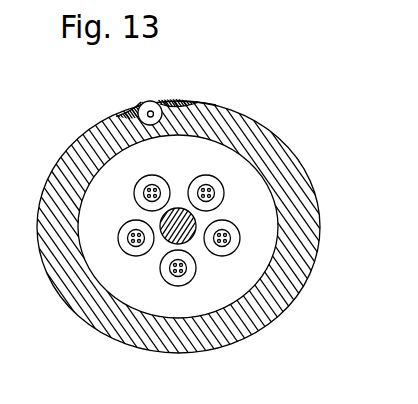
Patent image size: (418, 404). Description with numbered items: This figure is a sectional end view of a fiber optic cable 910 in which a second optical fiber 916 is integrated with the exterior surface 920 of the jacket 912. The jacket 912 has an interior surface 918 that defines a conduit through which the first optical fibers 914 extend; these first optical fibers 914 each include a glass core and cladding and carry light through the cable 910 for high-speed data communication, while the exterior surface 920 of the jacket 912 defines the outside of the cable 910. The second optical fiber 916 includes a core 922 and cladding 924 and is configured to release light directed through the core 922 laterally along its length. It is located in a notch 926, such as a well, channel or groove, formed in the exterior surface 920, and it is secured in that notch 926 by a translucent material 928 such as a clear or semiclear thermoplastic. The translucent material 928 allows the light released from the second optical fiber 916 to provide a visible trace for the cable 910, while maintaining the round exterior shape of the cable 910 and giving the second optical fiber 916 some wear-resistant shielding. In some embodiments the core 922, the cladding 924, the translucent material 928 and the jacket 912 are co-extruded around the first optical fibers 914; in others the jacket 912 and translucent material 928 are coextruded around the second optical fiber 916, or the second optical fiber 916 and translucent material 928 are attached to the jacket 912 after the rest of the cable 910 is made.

The fiber optic cable 910 is at (209, 212).
The jacket 912 is at (297, 272).
The first optical fiber 914 is at (128, 238).
The second optical fiber 916 is at (139, 109).
The interior surface 918 is at (238, 301).
The exterior surface 920 is at (316, 226).
The core 922 is at (152, 110).
The cladding 924 is at (165, 104).
The notch 926 is at (125, 100).
The translucent material 928 is at (192, 99).